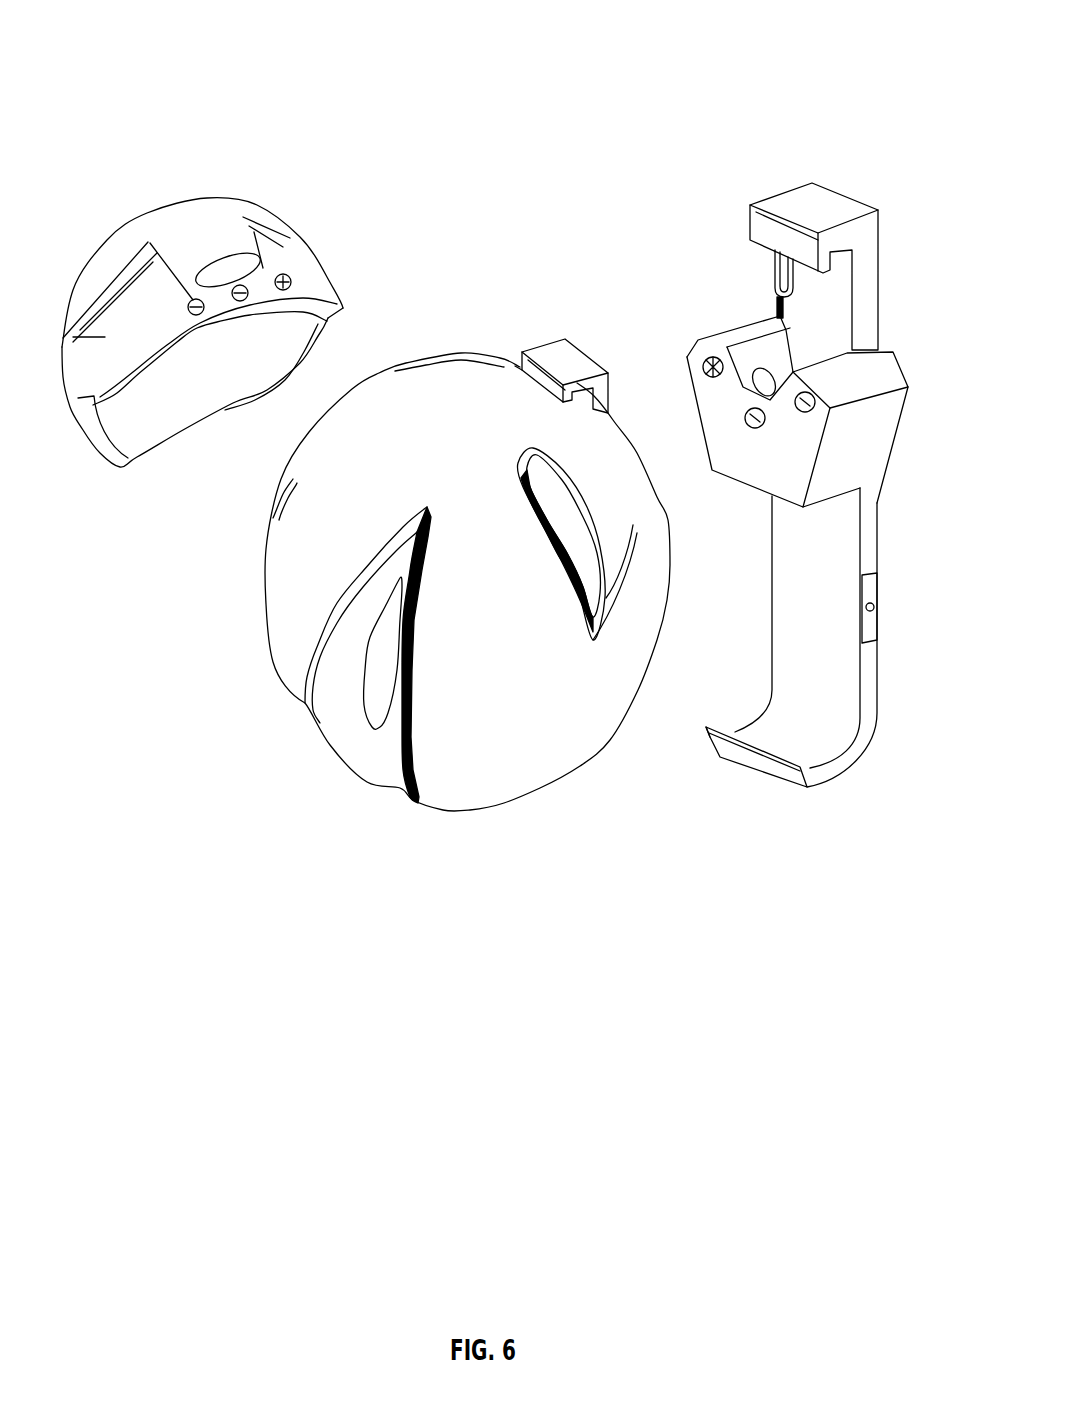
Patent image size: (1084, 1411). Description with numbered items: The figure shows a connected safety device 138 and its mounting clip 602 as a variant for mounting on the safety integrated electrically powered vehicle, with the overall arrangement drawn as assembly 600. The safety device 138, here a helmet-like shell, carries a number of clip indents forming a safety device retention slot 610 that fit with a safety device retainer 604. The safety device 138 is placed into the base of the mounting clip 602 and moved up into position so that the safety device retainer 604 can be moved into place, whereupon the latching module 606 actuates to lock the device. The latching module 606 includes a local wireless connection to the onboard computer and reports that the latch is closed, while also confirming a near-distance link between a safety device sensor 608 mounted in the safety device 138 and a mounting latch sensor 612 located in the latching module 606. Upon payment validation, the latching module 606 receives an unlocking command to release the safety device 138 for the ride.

The helmet mount assembly 600 is at (871, 66).
The safety device 138 is at (143, 217).
The safety device sensor 608 is at (192, 313).
The safety device retention slot 610 is at (515, 365).
The safety device retainer 604 is at (790, 250).
The mounting latch sensor 612 is at (702, 360).
The latching module 606 is at (855, 447).
The mounting clip 602 is at (710, 758).